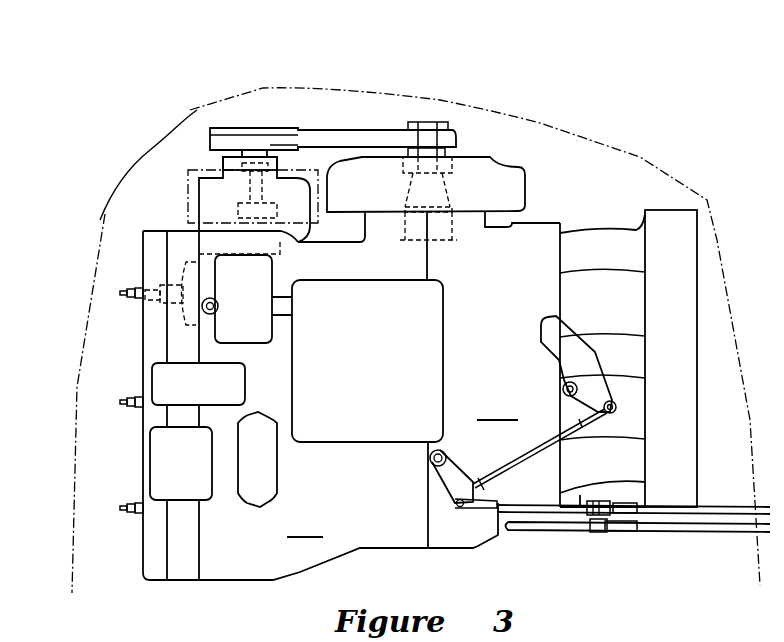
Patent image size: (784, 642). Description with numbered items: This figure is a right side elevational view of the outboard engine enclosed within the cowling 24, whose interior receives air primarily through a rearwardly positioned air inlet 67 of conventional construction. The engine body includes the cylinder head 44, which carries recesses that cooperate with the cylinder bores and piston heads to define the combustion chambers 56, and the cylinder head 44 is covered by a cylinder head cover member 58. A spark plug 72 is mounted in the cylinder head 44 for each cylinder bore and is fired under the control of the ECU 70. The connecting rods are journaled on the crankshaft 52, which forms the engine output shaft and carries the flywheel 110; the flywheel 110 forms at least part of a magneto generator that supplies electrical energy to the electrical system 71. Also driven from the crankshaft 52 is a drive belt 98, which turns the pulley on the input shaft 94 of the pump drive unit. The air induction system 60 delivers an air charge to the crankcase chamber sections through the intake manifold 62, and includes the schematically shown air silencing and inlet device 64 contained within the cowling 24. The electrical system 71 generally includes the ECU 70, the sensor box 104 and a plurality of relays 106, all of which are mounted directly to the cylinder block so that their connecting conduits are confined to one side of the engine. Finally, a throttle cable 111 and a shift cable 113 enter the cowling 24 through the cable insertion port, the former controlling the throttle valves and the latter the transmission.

The cowling 24 is at (105, 214).
The cylinder head 44 is at (177, 532).
The crankshaft 52 is at (452, 223).
The combustion chambers 56 is at (188, 263).
The cylinder head cover member 58 is at (158, 562).
The air induction system 60 is at (637, 93).
The intake manifold 62 is at (596, 233).
The air silencing and inlet device 64 is at (668, 210).
The air inlet 67 is at (198, 168).
The ECU 70 is at (368, 423).
The electrical system 71 is at (338, 72).
The spark plug 72 is at (119, 295).
The input shaft 94 is at (245, 193).
The drive belt 98 is at (333, 130).
The sensor box 104 is at (260, 328).
The relays 106 is at (248, 482).
The flywheel 110 is at (523, 163).
The throttle cable 111 is at (728, 506).
The shift cable 113 is at (655, 531).